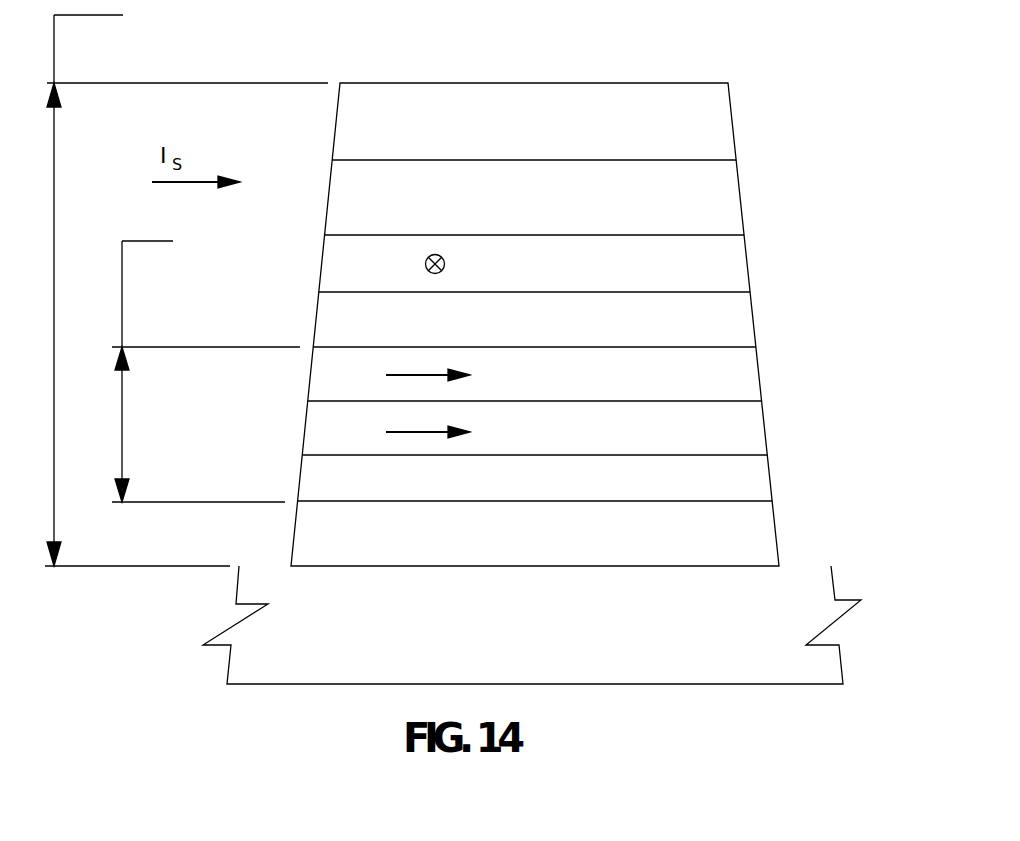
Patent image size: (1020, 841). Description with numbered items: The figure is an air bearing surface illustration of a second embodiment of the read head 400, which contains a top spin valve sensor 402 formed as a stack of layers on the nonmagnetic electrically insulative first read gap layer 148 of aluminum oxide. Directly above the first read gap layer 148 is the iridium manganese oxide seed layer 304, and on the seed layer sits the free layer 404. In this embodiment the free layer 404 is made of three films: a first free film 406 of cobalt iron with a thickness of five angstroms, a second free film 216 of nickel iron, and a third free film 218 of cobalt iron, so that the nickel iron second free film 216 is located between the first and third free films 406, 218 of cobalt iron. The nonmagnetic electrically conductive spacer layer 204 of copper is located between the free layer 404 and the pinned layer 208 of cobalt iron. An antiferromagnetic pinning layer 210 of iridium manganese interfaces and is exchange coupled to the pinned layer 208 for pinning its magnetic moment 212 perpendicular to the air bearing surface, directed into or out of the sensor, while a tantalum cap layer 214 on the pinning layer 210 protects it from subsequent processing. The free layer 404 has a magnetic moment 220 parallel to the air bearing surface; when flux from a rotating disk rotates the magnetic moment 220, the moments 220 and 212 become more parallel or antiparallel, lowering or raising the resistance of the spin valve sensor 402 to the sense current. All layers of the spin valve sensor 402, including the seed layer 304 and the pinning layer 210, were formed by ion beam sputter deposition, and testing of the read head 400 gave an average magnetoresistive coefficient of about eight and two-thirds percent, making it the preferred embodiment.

The read head 400 is at (660, 58).
The spin valve sensor 402 is at (186, 284).
The free layer 404 is at (206, 365).
The magnetic moment of the pinned layer 212 is at (423, 263).
The magnetic moment of the free layer 220 is at (408, 430).
The cap layer 214 is at (731, 119).
The antiferromagnetic pinning layer 210 is at (741, 205).
The pinned layer 208 is at (746, 266).
The spacer layer 204 is at (752, 323).
The third free film 218 is at (758, 372).
The second free film 216 is at (763, 432).
The first free film 406 is at (768, 480).
The seed layer 304 is at (773, 528).
The first read gap layer 148 is at (828, 580).